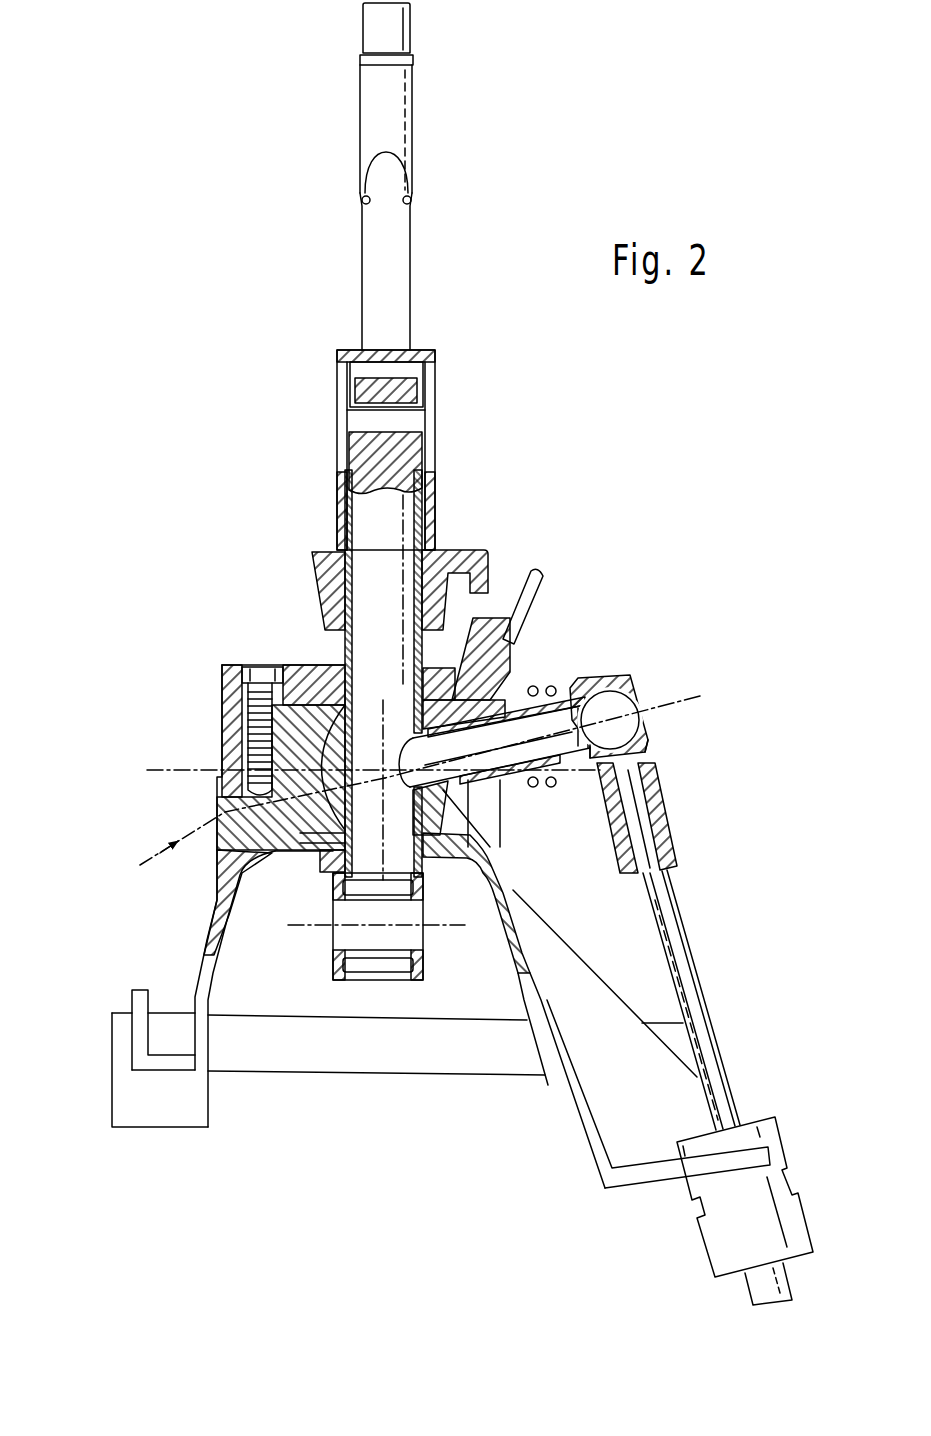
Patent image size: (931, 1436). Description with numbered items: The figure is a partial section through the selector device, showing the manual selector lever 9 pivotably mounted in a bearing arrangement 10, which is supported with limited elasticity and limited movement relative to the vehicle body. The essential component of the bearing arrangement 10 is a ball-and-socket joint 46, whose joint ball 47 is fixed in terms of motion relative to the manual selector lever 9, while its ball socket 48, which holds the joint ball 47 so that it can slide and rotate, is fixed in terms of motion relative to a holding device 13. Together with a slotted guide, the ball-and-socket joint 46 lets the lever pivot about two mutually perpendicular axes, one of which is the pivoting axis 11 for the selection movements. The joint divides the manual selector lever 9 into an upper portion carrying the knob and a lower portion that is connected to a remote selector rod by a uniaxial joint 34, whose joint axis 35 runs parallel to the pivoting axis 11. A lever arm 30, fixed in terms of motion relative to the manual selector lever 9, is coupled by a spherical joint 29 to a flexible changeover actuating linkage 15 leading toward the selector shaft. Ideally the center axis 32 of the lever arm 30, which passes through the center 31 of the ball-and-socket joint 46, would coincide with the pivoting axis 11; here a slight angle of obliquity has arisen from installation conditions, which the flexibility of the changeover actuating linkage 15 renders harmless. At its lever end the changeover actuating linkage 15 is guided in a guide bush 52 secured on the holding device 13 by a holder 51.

The manual selector lever 9 is at (350, 160).
The bearing arrangement 10 is at (315, 863).
The pivoting axis 11 is at (162, 767).
The holding device 13 is at (185, 935).
The changeover actuating linkage 15 is at (697, 968).
The spherical joint 29 is at (654, 727).
The lever arm 30 is at (510, 750).
The center of the ball-and-socket joint 31 is at (424, 858).
The center axis 32 is at (695, 688).
The uniaxial joint 34 is at (327, 938).
The joint axis 35 is at (307, 932).
The ball-and-socket joint 46 is at (310, 692).
The joint ball 47 is at (493, 840).
The ball socket 48 is at (240, 730).
The holder 51 is at (620, 1187).
The guide bush 52 is at (762, 1112).